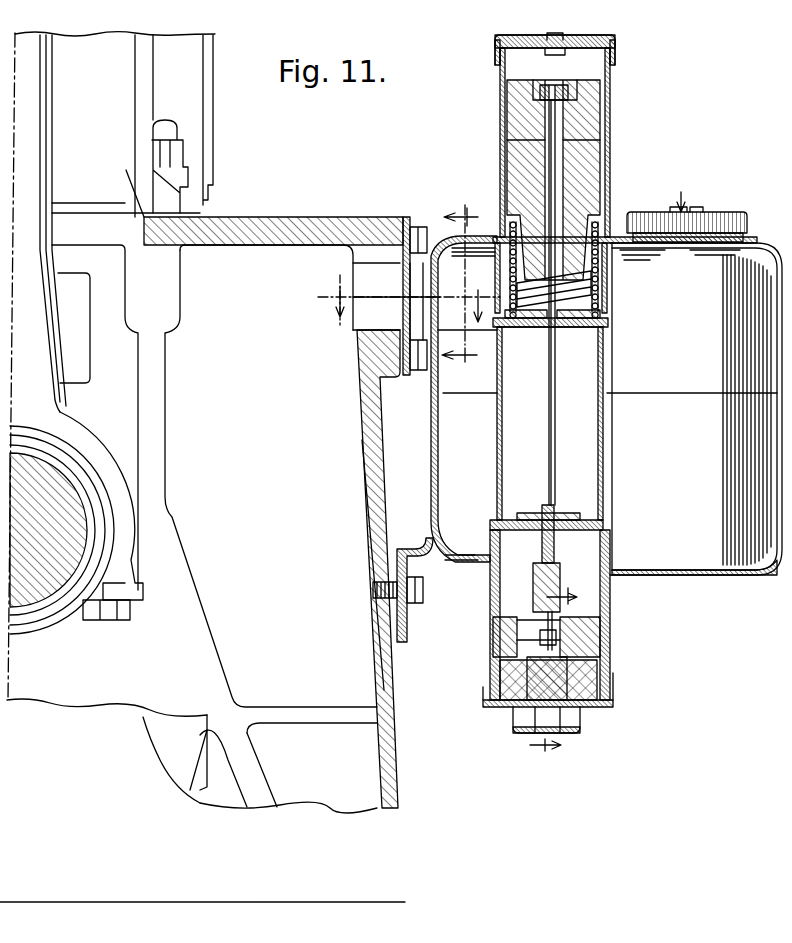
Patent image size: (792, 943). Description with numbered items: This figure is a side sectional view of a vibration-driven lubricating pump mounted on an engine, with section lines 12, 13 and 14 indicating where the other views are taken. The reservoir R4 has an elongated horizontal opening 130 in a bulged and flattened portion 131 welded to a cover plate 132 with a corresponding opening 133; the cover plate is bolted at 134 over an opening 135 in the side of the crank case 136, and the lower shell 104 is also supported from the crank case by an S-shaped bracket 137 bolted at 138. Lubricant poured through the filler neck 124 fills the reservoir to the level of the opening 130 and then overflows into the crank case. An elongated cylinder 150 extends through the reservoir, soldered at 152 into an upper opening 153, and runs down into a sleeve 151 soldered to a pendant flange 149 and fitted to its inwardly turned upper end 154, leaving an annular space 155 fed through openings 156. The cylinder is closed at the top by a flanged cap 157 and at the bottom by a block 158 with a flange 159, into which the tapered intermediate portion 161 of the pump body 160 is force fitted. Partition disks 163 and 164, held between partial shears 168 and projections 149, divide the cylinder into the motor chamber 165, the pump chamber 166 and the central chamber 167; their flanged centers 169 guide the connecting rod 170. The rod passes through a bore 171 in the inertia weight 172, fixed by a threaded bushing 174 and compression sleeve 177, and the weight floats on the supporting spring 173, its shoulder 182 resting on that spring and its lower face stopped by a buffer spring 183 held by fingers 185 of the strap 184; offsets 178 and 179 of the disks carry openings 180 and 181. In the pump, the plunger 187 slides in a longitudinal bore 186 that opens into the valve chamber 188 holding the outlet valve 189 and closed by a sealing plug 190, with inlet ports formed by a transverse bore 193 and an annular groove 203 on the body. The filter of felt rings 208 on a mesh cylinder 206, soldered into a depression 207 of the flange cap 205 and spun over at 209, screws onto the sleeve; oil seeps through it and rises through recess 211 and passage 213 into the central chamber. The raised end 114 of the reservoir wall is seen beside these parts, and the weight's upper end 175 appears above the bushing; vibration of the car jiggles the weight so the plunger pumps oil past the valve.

The lower shell 104 is at (780, 452).
The tank wall 114 is at (780, 368).
The filler neck 124 is at (748, 233).
The bolt 134 is at (403, 182).
The reservoir R4 is at (689, 188).
The section line 12— 12 is at (406, 275).
The section line 13— 13 is at (466, 287).
The section line 14— 14 is at (559, 671).
The elongated horizontal opening 130 is at (433, 307).
The bulged and flattened portion 131 is at (440, 247).
The cover plate 132 is at (413, 222).
The corresponding opening 133 is at (427, 287).
The opening 135 is at (360, 323).
The crank case 136 is at (367, 442).
The S-shaped bracket 137 is at (428, 557).
The bolt 138 is at (378, 590).
The pendant flange / inwardly struck projections 149 is at (607, 322).
The elongated cylinder 150 is at (605, 316).
The sleeve 151 is at (603, 617).
The solder joint 152 is at (608, 237).
The upper opening 153 is at (605, 252).
The inwardly turned upper end 154 is at (608, 545).
The annular space 155 is at (610, 647).
The openings 156 is at (478, 562).
The flanged cap 157 is at (613, 51).
The block 158 is at (500, 647).
The flange 159 is at (507, 660).
The pump body 160 is at (537, 578).
The tapered intermediate portion 161 is at (603, 657).
The upper partition disk 163 is at (610, 325).
The lower partition disk 164 is at (604, 508).
The uppermost chamber 165 is at (608, 148).
The lowermost chamber 166 is at (592, 415).
The central chamber 167 is at (590, 567).
The partial shears 168 is at (614, 335).
The flanged central aperture 169 is at (545, 320).
The connecting rod 170 is at (556, 383).
The bore 171 is at (543, 147).
The inertia weight 172 is at (588, 167).
The coiled supporting spring 173 is at (600, 268).
The threaded bushing 174 is at (570, 92).
The rod end 175 is at (548, 112).
The compression sleeve 177 is at (567, 127).
The upstruck offset 178 is at (575, 325).
The upstruck offset 179 is at (570, 517).
The opening 180 is at (522, 313).
The opening 181 is at (540, 517).
The shoulder 182 is at (507, 193).
The buffer spring 183 is at (507, 312).
The disk or strap 184 is at (540, 320).
The outstruck fingers 185 is at (603, 298).
The longitudinal bore 186 is at (540, 592).
The plunger 187 is at (554, 550).
The valve chamber 188 is at (527, 680).
The outlet valve 189 is at (500, 625).
The sealing plug 190 is at (515, 707).
The transverse bore 193 is at (500, 608).
The annular groove 203 is at (598, 607).
The flange cap 205 is at (610, 710).
The mesh cylinder 206 is at (580, 717).
The depression 207 is at (580, 725).
The felt filter rings 208 is at (613, 693).
The spun-over top 209 is at (500, 683).
The recess 211 is at (603, 673).
The passage 213 is at (503, 630).